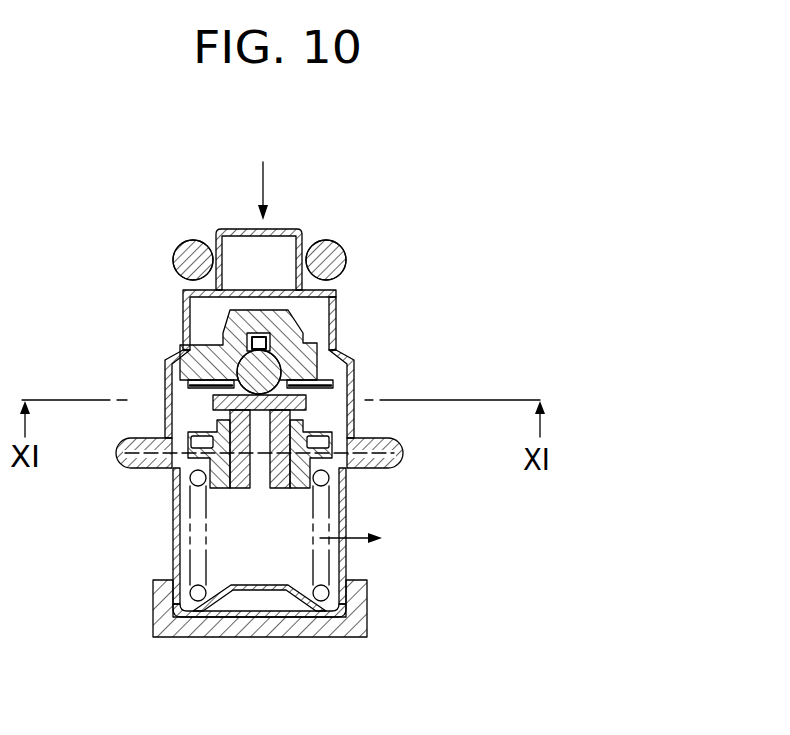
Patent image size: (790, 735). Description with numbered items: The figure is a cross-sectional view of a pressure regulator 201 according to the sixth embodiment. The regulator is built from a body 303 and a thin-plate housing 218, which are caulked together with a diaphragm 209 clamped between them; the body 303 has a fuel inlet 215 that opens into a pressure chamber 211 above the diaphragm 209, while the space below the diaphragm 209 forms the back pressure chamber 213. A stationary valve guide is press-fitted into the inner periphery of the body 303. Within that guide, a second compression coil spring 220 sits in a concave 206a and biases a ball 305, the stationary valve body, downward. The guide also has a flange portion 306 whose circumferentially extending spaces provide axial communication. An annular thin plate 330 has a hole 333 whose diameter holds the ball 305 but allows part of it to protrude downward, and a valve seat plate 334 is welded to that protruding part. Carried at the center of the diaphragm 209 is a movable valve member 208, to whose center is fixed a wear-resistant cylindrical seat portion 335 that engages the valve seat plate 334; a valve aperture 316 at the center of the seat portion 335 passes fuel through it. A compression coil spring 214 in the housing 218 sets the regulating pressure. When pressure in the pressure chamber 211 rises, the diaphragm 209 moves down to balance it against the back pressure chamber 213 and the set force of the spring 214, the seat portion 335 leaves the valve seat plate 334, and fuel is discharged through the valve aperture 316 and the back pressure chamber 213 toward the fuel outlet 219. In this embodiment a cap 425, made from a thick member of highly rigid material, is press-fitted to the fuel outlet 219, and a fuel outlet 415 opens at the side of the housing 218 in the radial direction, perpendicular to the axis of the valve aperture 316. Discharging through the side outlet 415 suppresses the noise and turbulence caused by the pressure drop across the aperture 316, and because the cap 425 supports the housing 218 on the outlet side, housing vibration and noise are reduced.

The pressure regulator 201 is at (166, 310).
The concave 206a is at (182, 350).
The movable valve member 208 is at (178, 510).
The diaphragm 209 is at (172, 473).
The pressure chamber 211 is at (185, 421).
The back pressure chamber 213 is at (295, 563).
The compression coil spring 214 is at (258, 488).
The fuel inlet 215 is at (272, 250).
The housing 218 is at (172, 556).
The fuel outlet 219 is at (255, 590).
The second compression coil spring 220 is at (275, 336).
The body 303 is at (334, 320).
The ball 305 is at (343, 360).
The flange portion 306 is at (182, 347).
The valve aperture 316 is at (165, 592).
The annular thin plate 330 is at (285, 366).
The hole 333 is at (307, 406).
The valve seat plate 334 is at (200, 385).
The cylindrical seat portion 335 is at (290, 496).
The fuel outlet 415 is at (347, 553).
The cap 425 is at (163, 625).